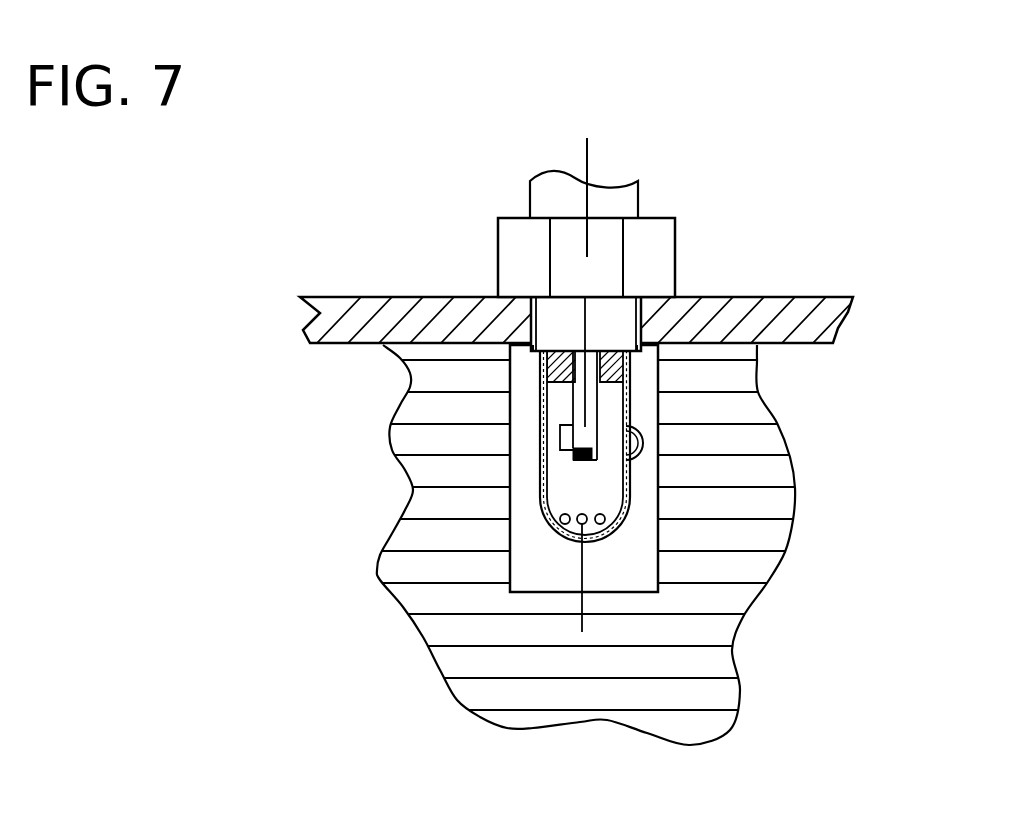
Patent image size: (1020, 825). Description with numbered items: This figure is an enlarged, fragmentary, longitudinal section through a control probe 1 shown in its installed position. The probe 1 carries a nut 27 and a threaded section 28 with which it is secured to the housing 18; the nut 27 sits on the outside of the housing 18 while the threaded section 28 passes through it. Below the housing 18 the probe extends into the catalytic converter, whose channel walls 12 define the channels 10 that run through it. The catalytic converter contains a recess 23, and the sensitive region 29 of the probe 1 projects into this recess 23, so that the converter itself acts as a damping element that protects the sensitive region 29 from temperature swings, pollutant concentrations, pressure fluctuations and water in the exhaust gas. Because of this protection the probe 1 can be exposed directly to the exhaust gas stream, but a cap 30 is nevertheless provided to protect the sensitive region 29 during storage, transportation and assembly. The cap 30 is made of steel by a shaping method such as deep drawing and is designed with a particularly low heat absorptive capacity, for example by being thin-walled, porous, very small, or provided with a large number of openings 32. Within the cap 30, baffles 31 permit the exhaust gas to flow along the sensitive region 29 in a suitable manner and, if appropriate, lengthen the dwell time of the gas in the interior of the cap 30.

The control probe 1 is at (468, 204).
The channels 10 is at (430, 503).
The channel walls 12 is at (428, 393).
The housing 18 is at (367, 296).
The recess 23 is at (533, 568).
The nut 27 is at (652, 230).
The threaded section 28 is at (622, 315).
The sensitive region 29 is at (587, 460).
The cap 30 is at (620, 393).
The baffles 31 is at (643, 443).
The openings 32 is at (600, 524).